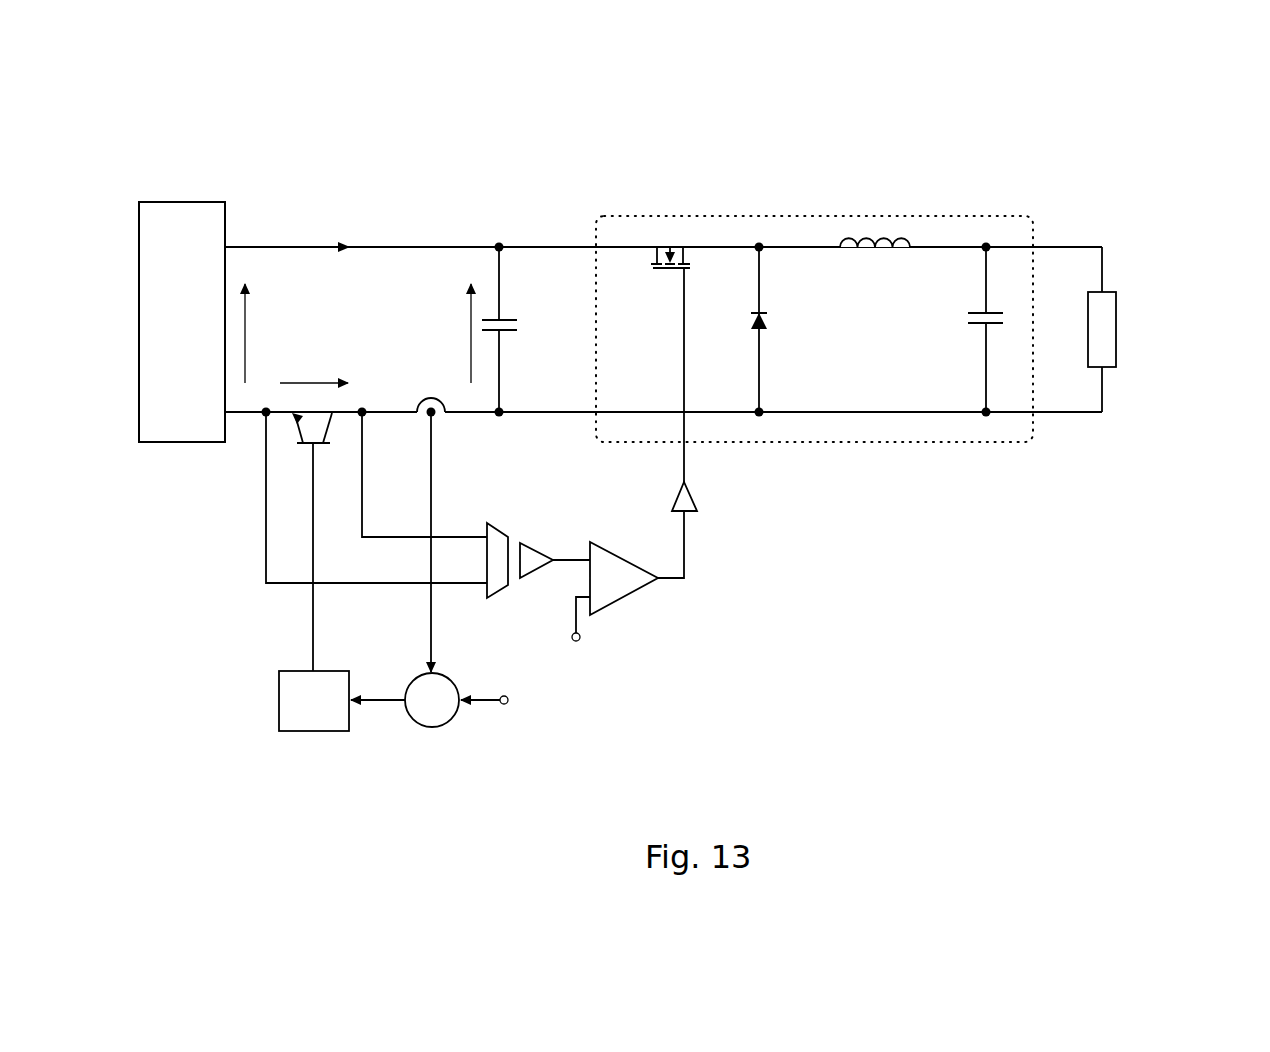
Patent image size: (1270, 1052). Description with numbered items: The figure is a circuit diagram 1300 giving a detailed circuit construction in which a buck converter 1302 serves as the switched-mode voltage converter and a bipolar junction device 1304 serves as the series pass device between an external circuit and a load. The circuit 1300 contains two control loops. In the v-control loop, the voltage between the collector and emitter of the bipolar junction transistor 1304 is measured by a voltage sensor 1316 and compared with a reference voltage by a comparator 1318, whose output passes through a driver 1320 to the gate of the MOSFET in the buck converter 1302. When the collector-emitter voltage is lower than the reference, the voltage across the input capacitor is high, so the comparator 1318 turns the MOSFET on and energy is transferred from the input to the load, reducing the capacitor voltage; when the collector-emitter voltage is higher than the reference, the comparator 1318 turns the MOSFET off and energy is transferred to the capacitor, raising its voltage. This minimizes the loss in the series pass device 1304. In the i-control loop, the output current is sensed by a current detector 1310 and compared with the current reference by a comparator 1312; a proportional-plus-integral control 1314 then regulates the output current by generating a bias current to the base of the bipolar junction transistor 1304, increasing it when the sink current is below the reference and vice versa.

The circuit diagram 1300 is at (1025, 157).
The buck converter 1302 is at (814, 295).
The bipolar junction device 1304 is at (285, 435).
The current detector 1310 is at (441, 417).
The comparator 1312 is at (443, 745).
The proportional-plus-integral control 1314 is at (310, 718).
The voltage sensor 1316 is at (548, 547).
The comparator 1318 is at (630, 597).
The driver 1320 is at (729, 403).